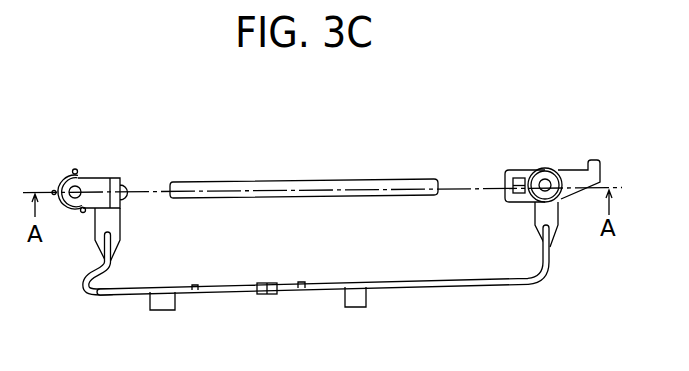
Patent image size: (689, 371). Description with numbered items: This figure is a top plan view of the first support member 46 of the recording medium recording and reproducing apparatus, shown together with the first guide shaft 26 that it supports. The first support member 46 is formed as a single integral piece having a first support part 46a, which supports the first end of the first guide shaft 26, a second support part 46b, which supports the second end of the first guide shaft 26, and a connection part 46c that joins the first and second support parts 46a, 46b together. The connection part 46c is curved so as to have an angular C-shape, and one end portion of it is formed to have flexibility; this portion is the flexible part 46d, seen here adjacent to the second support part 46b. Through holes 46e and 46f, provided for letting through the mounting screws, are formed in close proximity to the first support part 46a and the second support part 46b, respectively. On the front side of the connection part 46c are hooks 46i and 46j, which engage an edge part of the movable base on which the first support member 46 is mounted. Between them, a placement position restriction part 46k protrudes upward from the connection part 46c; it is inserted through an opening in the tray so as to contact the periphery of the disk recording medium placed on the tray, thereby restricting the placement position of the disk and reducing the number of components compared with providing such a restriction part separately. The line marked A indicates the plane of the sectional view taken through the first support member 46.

The first guide shaft 26 is at (386, 178).
The first support member 46 is at (316, 286).
The first support part 46a is at (515, 170).
The second support part 46b is at (103, 176).
The connection part 46c is at (462, 290).
The flexible part 46d is at (90, 297).
The through hole 46e is at (558, 168).
The through hole 46f is at (80, 184).
The hook 46i is at (366, 306).
The hook 46j is at (163, 310).
The placement position restriction part 46k is at (260, 295).